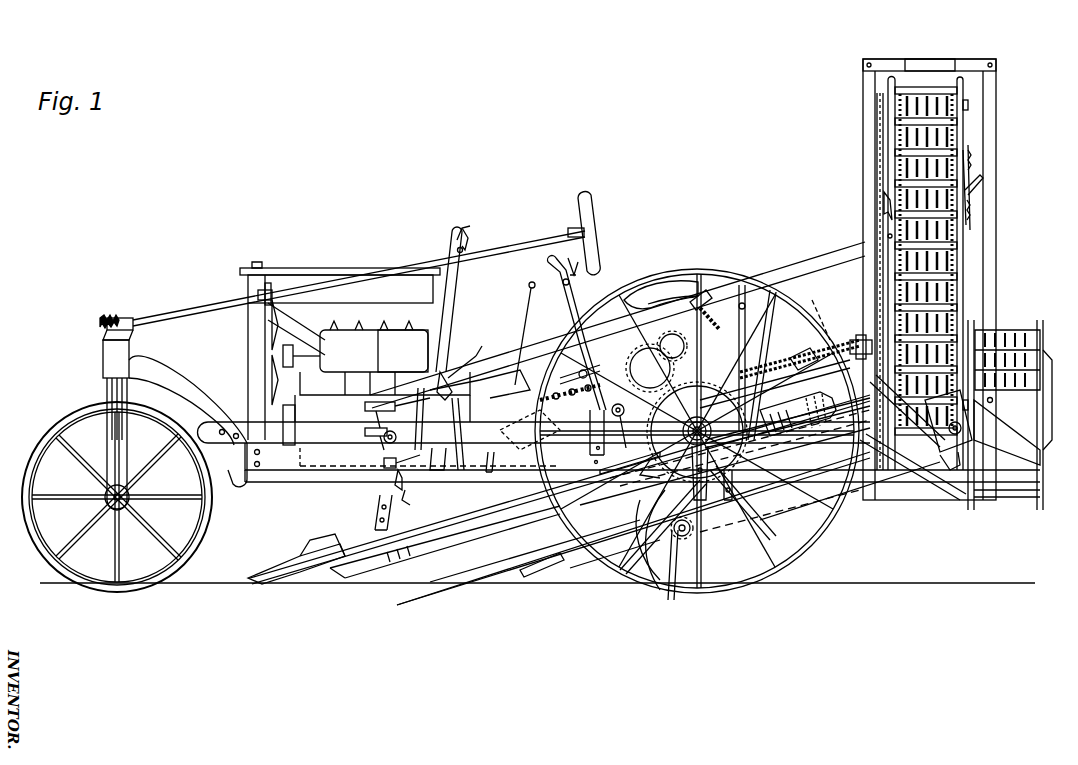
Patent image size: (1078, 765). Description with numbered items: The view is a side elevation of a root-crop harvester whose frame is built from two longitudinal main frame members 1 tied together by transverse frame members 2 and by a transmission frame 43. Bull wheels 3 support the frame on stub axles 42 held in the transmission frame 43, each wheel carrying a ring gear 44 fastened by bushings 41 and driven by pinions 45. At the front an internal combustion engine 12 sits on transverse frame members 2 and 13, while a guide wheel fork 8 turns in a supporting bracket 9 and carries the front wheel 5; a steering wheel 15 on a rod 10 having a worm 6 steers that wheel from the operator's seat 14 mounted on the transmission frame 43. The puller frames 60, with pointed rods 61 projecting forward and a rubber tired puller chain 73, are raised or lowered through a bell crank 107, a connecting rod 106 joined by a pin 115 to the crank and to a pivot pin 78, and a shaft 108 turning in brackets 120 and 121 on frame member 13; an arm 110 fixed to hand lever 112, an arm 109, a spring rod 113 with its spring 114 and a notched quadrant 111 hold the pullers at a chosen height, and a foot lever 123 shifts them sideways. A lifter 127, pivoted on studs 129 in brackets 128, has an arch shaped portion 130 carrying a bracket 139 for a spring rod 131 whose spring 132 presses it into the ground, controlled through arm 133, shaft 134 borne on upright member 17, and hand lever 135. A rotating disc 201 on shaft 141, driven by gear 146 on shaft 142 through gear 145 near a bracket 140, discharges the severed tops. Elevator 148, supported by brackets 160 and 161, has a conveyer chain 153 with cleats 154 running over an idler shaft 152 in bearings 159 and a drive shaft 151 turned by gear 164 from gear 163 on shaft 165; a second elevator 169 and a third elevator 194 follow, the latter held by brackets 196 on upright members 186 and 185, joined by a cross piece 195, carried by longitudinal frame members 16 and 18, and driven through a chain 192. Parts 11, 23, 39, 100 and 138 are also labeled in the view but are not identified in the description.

The main frame members 1 is at (270, 470).
The transverse frame members 2 is at (1040, 470).
The bull wheels 3 is at (735, 590).
The guiding or front wheel 5 is at (40, 448).
The worm 6 is at (112, 315).
The guide wheel fork 8 is at (113, 445).
The supporting bracket 9 is at (172, 374).
The rod 10 is at (188, 310).
The side frame member 11 is at (272, 440).
The internal combustion engine 12 is at (355, 353).
The transverse frame member 13 is at (420, 452).
The operator's seat 14 is at (660, 298).
The steering wheel 15 is at (578, 198).
The longitudinal frame member 16 is at (812, 268).
The upright member 17 is at (744, 300).
The longitudinal frame member 18 is at (768, 300).
The drawbar 23 is at (910, 490).
The shaft 39 is at (782, 370).
The bushings 41 is at (712, 479).
The stub axles 42 is at (674, 524).
The transmission frame 43 is at (708, 306).
The ring gears 44 is at (663, 530).
The pinions 45 is at (686, 397).
The puller frames 60 is at (490, 530).
The pointed rods 61 is at (268, 572).
The rubber tired puller chain 73 is at (440, 548).
The extended pivot pin 78 is at (370, 512).
The connecting link 100 is at (655, 470).
The connecting rod 106 is at (386, 466).
The bell crank 107 is at (410, 488).
The shaft 108 is at (492, 474).
The arm 109 is at (440, 472).
The arm 110 is at (462, 472).
The quadrant shaped piece 111 is at (456, 376).
The hand lever 112 is at (452, 232).
The spring rod 113 is at (365, 409).
The spring 114 is at (365, 432).
The pin 115 is at (385, 442).
The bracket 120 is at (425, 392).
The bracket 121 is at (486, 396).
The foot lever 123 is at (518, 370).
The lifter 127 is at (466, 590).
The brackets 128 is at (545, 575).
The studs 129 is at (600, 560).
The arch shaped portion 130 is at (560, 530).
The spring rod 131 is at (556, 366).
The spring 132 is at (556, 392).
The arm 133 is at (590, 372).
The shaft 134 is at (627, 435).
The hand lever 135 is at (548, 264).
The hanger 138 is at (600, 420).
The bracket 139 is at (525, 452).
The bracket 140 is at (858, 340).
The shaft 141 is at (798, 411).
The shaft 142 is at (814, 312).
The gear 145 is at (800, 360).
The gear 146 is at (806, 350).
The elevator 148 is at (828, 482).
The elevator drive shaft 151 is at (958, 470).
The idler shaft 152 is at (685, 580).
The conveyer chain 153 is at (806, 500).
The cleats 154 is at (822, 530).
The bearings 159 is at (660, 592).
The brackets 160 is at (735, 530).
The brackets 161 is at (916, 470).
The gear 163 is at (950, 455).
The gear 164 is at (955, 436).
The shaft 165 is at (880, 485).
The second elevator 169 is at (1036, 330).
The second upright 185 is at (990, 124).
The upright member 186 is at (868, 125).
The chain 192 is at (884, 200).
The third elevator 194 is at (960, 278).
The cross piece 195 is at (910, 60).
The brackets 196 is at (975, 178).
The rotating disc 201 is at (812, 418).